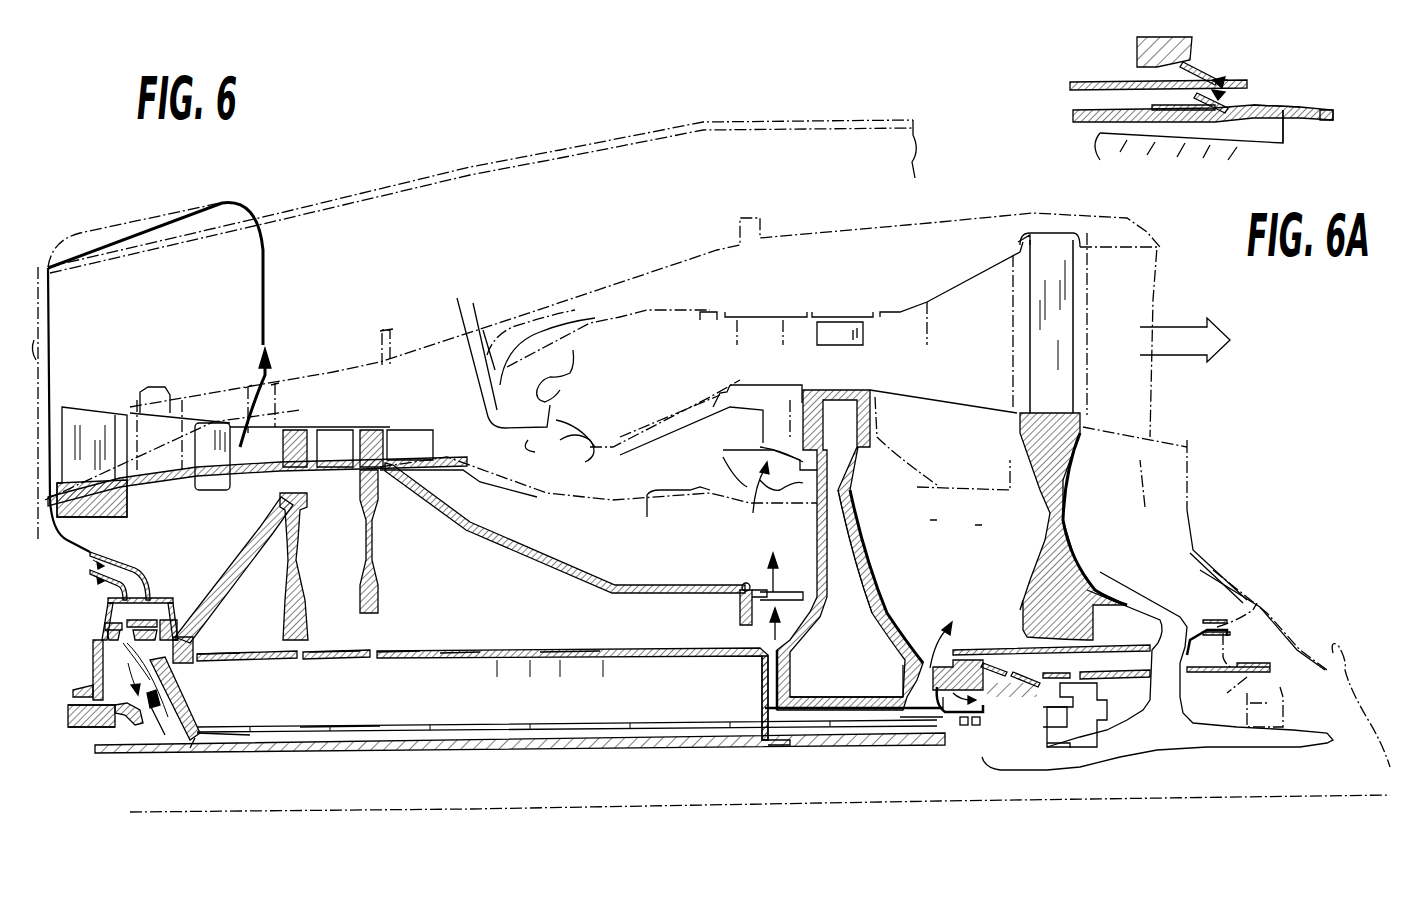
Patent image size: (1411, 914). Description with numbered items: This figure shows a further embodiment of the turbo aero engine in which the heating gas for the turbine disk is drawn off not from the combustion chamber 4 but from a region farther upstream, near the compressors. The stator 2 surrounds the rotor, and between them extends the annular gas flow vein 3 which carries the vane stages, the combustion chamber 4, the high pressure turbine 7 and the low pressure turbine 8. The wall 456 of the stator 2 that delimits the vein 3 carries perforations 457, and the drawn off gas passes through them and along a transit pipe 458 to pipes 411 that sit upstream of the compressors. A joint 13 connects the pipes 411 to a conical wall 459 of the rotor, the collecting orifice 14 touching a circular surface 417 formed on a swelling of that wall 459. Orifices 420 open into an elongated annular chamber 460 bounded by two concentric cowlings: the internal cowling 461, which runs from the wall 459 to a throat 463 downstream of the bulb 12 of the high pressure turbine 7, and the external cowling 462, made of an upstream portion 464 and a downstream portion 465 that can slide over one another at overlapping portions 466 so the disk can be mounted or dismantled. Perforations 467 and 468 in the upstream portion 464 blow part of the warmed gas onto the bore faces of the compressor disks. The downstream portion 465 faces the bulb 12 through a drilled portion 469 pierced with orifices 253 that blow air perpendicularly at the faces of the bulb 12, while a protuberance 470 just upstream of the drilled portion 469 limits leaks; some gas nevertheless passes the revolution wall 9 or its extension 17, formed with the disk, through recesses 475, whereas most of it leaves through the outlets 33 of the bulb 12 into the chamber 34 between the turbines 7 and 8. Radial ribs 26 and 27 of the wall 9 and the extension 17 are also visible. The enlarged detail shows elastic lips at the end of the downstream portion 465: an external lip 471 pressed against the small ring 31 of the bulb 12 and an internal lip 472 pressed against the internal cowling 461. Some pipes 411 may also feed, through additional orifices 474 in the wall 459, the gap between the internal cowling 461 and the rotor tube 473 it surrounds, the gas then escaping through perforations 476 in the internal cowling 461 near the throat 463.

In FIG. 6, the stator 2 is at (348, 165).
In FIG. 6, the annular gas flow vein 3 is at (130, 413).
In FIG. 6, the combustion chamber 4 is at (603, 316).
In FIG. 6, the high pressure turbine 7 is at (845, 513).
In FIG. 6, the low pressure turbine 8 is at (1047, 534).
In FIG. 6, the revolution wall 9 is at (598, 580).
In FIG. 6, the bulb 12 is at (837, 627).
In FIG. 6, the joint 13 is at (170, 587).
In FIG. 6, the orifice 14 is at (190, 600).
In FIG. 6, the extension 17 is at (790, 590).
In FIG. 6, the radial rib 26 is at (738, 593).
In FIG. 6, the radial rib 27 is at (752, 627).
In FIG. 6, the small ring 31 is at (958, 695).
In FIG. 6A, the small ring 31 is at (1190, 62).
In FIG. 6, the orifices 33 is at (925, 667).
In FIG. 6, the chamber 34 is at (956, 518).
In FIG. 6, the orifices 253 is at (820, 710).
In FIG. 6, the pipes 411 is at (107, 557).
In FIG. 6, the circular surface 417 is at (93, 640).
In FIG. 6, the orifices 420 is at (167, 683).
In FIG. 6, the stator wall 456 is at (318, 377).
In FIG. 6, the perforations 457 is at (285, 350).
In FIG. 6, the transit pipe 458 is at (229, 200).
In FIG. 6, the wall 459 is at (88, 745).
In FIG. 6, the chamber 460 is at (540, 710).
In FIG. 6, the internal cowling 461 is at (417, 732).
In FIG. 6A, the internal cowling 461 is at (1100, 126).
In FIG. 6, the external cowling 462 is at (462, 650).
In FIG. 6, the throat 463 is at (988, 730).
In FIG. 6A, the throat 463 is at (1327, 118).
In FIG. 6, the upstream portion 464 is at (336, 662).
In FIG. 6, the downstream portion 465 is at (672, 658).
In FIG. 6A, the downstream portion 465 is at (1113, 82).
In FIG. 6, the overlapping portions 466 is at (569, 650).
In FIG. 6, the perforations 467 is at (293, 658).
In FIG. 6, the perforations 468 is at (370, 662).
In FIG. 6, the drilled portion 469 is at (777, 703).
In FIG. 6, the protuberance 470 is at (760, 653).
In FIG. 6A, the external lip 471 is at (1217, 77).
In FIG. 6, the internal lip 472 is at (234, 738).
In FIG. 6A, the internal lip 472 is at (1307, 90).
In FIG. 6, the rotor tube 473 is at (337, 752).
In FIG. 6, the additional orifices 474 is at (90, 730).
In FIG. 6, the recesses 475 is at (768, 583).
In FIG. 6, the perforations 476 is at (957, 724).
In FIG. 6A, the perforations 476 is at (1240, 143).